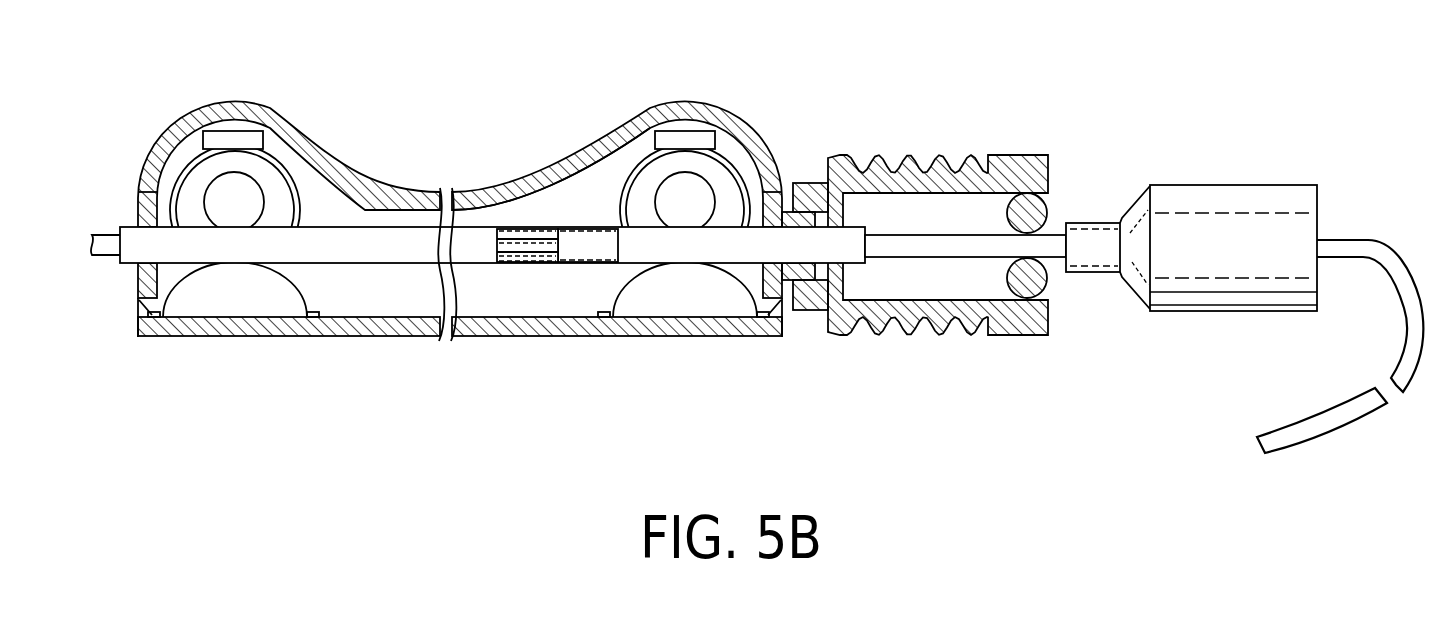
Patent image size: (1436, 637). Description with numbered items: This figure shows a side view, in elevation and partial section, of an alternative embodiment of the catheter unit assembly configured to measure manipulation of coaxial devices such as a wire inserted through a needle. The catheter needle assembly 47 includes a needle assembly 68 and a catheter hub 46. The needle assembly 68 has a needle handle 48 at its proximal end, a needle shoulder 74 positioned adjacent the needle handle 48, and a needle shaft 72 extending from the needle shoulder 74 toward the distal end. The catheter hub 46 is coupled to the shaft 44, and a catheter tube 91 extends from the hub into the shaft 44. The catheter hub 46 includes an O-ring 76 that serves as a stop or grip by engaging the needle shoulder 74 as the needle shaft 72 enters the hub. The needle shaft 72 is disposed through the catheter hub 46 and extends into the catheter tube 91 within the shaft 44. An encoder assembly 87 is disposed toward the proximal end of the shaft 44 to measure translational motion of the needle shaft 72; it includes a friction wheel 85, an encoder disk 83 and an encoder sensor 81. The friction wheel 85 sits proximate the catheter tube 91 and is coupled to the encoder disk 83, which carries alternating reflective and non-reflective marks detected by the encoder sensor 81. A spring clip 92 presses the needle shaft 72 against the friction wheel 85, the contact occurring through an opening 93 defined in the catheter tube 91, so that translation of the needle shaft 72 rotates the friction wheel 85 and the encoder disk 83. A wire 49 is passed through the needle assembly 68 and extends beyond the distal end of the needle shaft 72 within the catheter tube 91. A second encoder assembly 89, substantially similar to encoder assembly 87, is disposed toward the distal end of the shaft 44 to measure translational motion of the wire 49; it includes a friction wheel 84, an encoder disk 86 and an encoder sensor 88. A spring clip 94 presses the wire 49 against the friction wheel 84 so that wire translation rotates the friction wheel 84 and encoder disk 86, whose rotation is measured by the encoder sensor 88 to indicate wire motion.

The encoder assembly 89 is at (170, 98).
The encoder sensor 88 is at (230, 136).
The encoder disk 86 is at (270, 180).
The friction wheel 84 is at (247, 212).
The spring clip 94 is at (177, 298).
The catheter tube 91 is at (463, 217).
The encoder sensor 81 is at (680, 136).
The encoder disk 83 is at (717, 162).
The encoder assembly 87 is at (750, 158).
The friction wheel 85 is at (652, 202).
The opening 93 is at (713, 223).
The spring clip 92 is at (627, 300).
The shaft 44 is at (563, 336).
The catheter needle assembly 47 is at (952, 97).
The catheter hub 46 is at (895, 336).
The O-ring 76 is at (1050, 208).
The needle shaft 72 is at (603, 253).
The wire 49 is at (1310, 437).
The needle shoulder 74 is at (1095, 273).
The needle handle 48 is at (1193, 311).
The needle assembly 68 is at (1220, 160).